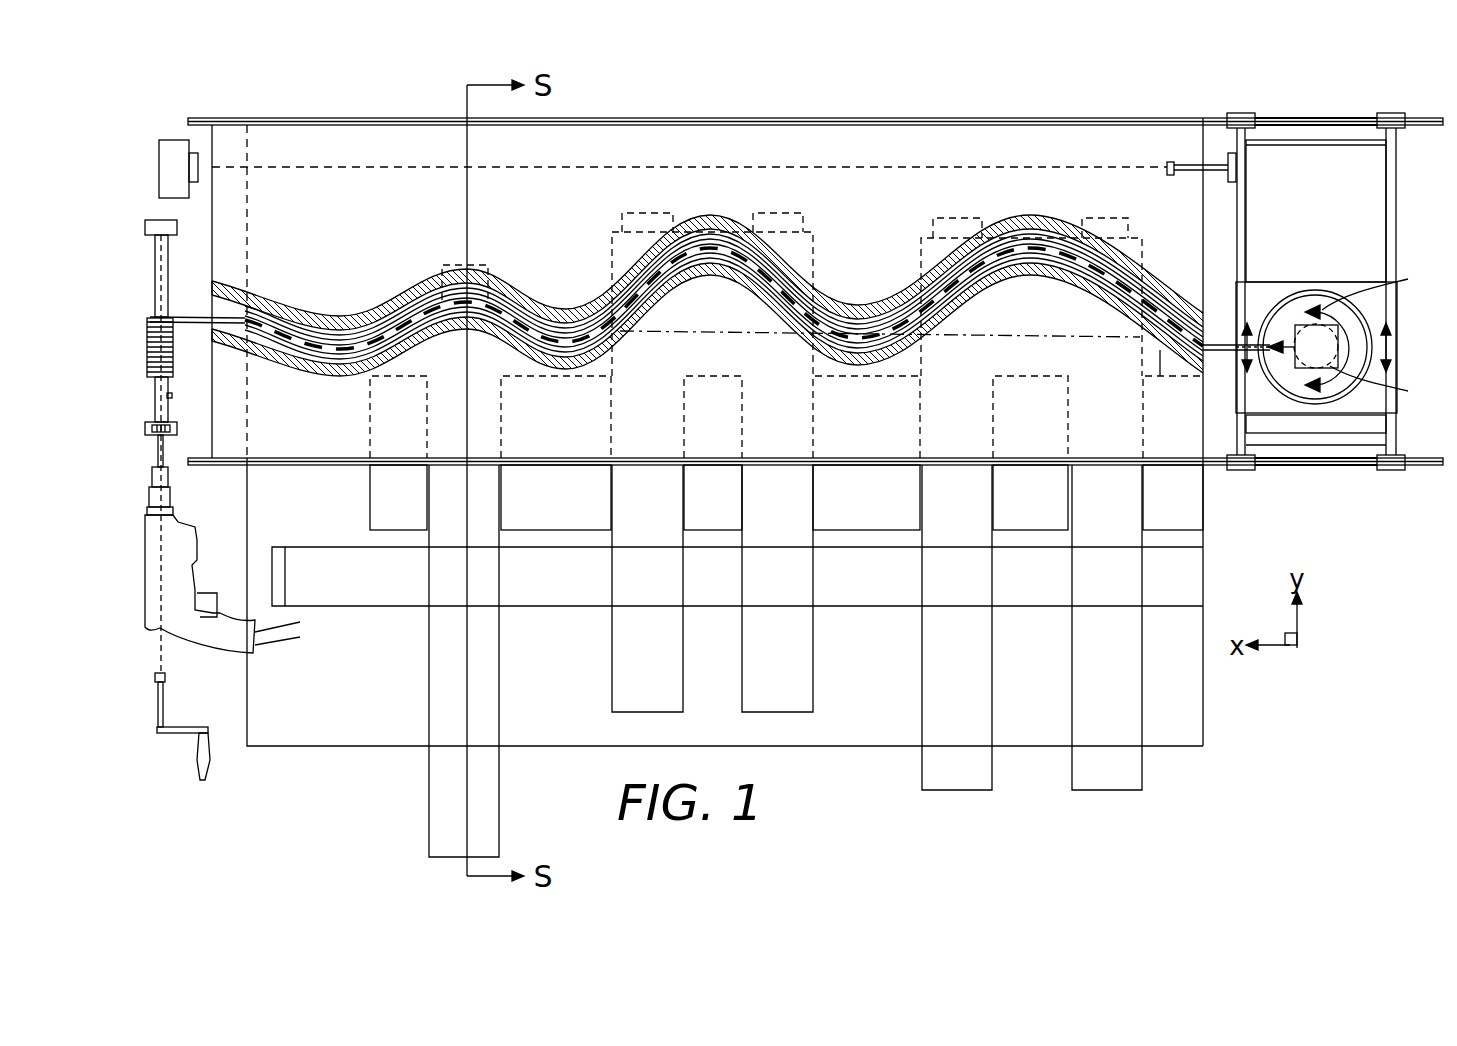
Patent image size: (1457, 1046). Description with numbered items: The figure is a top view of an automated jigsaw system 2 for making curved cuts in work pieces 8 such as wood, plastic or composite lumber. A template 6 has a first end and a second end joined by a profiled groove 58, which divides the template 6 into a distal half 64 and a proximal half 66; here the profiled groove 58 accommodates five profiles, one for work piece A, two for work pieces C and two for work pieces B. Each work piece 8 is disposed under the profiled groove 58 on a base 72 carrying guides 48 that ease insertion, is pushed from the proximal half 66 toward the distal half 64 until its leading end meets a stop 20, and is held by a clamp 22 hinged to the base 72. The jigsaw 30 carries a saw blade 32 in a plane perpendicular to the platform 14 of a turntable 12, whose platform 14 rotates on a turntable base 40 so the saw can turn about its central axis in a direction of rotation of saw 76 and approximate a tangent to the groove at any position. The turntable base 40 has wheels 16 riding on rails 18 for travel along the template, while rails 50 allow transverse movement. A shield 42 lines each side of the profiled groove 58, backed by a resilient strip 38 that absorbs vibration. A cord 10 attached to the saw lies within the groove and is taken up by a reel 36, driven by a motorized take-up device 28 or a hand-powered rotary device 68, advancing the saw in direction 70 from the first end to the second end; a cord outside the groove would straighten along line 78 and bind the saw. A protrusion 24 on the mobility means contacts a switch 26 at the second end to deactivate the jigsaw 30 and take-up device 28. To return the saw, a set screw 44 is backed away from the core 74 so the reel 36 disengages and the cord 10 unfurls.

The automated jigsaw system 2 is at (908, 42).
The template 6 is at (608, 117).
The work piece 8 is at (438, 512).
The cord 10 is at (152, 319).
The turntable 12 is at (1312, 257).
The platform 14 is at (1318, 300).
The wheel 16 is at (1243, 113).
The rail 18 is at (1292, 119).
The stop 20 is at (453, 265).
The clamp 22 is at (566, 588).
The protrusion 24 is at (1170, 162).
The switch 26 is at (198, 152).
The take-up device 28 is at (197, 526).
The jigsaw 30 is at (1358, 337).
The saw blade 32 is at (1385, 389).
The reel 36 is at (155, 262).
The strip 38 is at (212, 284).
The turntable base 40 is at (1277, 282).
The shield 42 is at (215, 300).
The set screw 44 is at (171, 397).
The guide 48 is at (379, 526).
The rail 50 is at (1245, 165).
The profiled groove 58 is at (337, 345).
The distal half 64 is at (263, 254).
The proximal half 66 is at (263, 429).
The hand-powered rotary device 68 is at (492, 308).
The direction 70 is at (1283, 350).
The base 72 is at (331, 721).
The core 74 is at (155, 410).
The direction of rotation of saw 76 is at (1381, 281).
The line 78 is at (1032, 336).